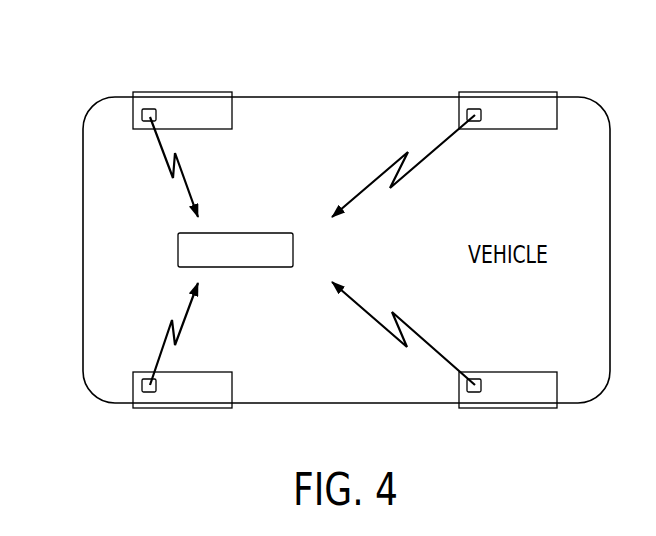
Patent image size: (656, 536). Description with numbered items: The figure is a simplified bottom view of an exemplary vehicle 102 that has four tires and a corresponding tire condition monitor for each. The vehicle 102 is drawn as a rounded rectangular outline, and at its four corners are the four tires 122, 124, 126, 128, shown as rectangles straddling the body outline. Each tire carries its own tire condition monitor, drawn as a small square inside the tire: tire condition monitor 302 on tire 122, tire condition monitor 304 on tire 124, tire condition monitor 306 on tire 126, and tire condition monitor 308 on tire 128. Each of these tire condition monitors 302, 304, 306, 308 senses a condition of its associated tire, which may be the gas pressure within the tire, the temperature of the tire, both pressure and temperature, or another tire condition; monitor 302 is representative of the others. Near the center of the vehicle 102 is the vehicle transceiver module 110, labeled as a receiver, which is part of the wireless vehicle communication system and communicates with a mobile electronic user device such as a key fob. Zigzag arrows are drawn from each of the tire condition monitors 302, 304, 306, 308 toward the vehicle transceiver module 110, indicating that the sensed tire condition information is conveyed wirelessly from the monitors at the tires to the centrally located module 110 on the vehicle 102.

The vehicle 102 is at (81, 248).
The vehicle transceiver module 110 is at (236, 233).
The tire 122 is at (510, 92).
The tire 124 is at (184, 408).
The tire 126 is at (184, 92).
The tire 128 is at (510, 408).
The tire condition monitor 302 is at (472, 109).
The tire condition monitor 304 is at (147, 392).
The tire condition monitor 306 is at (147, 109).
The tire condition monitor 308 is at (472, 392).